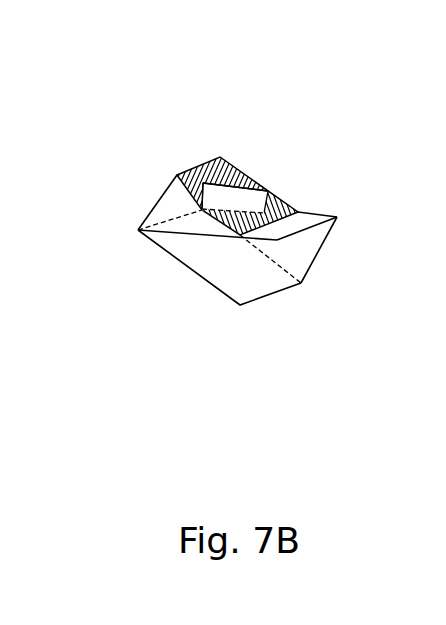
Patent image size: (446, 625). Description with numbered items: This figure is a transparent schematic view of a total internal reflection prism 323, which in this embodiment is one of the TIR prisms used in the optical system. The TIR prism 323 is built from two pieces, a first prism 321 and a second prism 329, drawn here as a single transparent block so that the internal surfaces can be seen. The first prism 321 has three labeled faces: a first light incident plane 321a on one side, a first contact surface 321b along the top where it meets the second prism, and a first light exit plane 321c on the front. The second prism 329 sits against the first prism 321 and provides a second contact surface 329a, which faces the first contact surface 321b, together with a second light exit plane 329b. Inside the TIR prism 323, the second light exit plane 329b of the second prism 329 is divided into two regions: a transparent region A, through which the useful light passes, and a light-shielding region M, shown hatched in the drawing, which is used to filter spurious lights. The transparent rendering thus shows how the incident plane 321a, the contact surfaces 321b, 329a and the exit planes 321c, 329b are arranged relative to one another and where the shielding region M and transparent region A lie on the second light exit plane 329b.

The first prism 321 is at (267, 272).
The first light incident plane 321a is at (300, 254).
The first contact surface 321b is at (310, 214).
The first light exit plane 321c is at (237, 264).
The total internal reflection prism 323 is at (230, 207).
The second prism 329 is at (197, 149).
The second contact surface 329a is at (194, 224).
The second light exit plane 329b is at (246, 203).
The light-shielding region M is at (162, 184).
The transparent region A is at (264, 211).